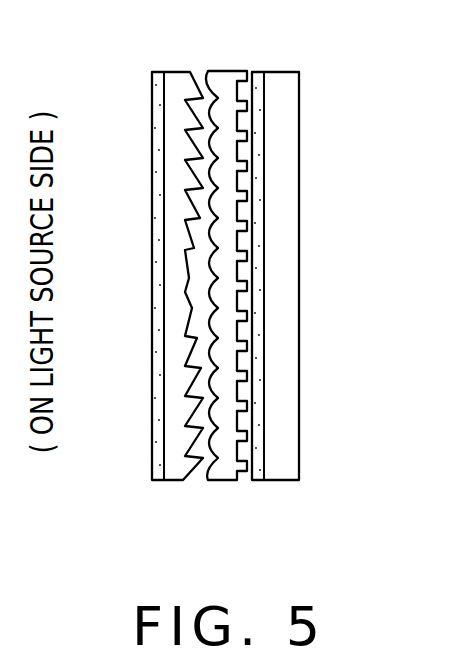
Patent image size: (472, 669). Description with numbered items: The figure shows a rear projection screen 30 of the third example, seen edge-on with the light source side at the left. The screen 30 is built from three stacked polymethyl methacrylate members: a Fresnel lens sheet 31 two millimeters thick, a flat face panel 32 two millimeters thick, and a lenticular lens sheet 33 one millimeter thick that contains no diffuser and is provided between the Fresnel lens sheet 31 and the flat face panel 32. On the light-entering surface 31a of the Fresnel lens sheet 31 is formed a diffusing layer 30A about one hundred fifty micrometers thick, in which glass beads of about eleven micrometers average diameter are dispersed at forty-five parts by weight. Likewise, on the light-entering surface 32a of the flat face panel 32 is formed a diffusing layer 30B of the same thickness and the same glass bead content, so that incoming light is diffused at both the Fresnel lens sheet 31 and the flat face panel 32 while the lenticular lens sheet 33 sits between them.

The rear projection screen 30 is at (300, 520).
The diffusing layer 30A is at (157, 72).
The diffusing layer 30B is at (262, 72).
The Fresnel lens sheet 31 is at (174, 481).
The light-entering surface 31a is at (152, 257).
The flat face panel 32 is at (286, 481).
The light-entering surface 32a is at (258, 238).
The lenticular lens sheet 33 is at (223, 481).